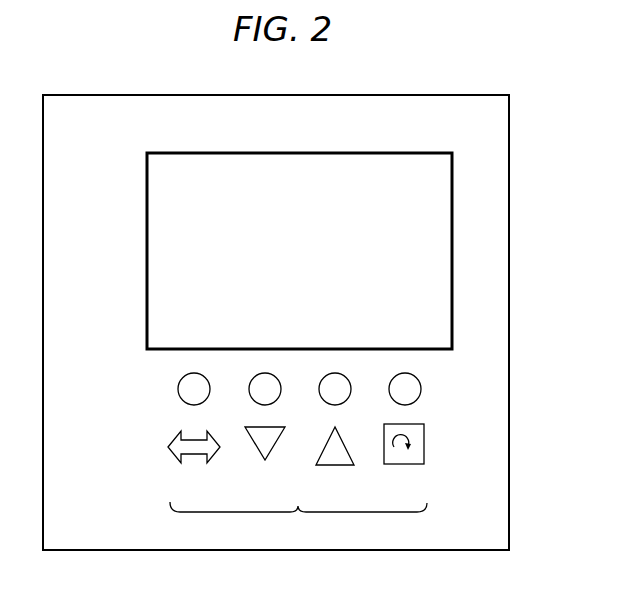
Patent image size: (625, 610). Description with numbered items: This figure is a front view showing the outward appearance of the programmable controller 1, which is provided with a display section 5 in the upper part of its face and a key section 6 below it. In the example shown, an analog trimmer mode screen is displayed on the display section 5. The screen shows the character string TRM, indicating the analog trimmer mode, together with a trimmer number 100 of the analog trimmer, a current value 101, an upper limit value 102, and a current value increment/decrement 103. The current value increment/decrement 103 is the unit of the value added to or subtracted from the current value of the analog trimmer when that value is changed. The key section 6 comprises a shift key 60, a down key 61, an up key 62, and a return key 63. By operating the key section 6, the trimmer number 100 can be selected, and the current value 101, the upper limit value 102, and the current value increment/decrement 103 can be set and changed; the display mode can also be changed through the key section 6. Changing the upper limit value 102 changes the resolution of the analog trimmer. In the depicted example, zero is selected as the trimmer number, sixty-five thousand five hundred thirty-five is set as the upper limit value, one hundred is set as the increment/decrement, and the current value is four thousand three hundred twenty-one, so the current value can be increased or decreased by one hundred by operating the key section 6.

The programmable controller 1 is at (64, 95).
The display section 5 is at (157, 153).
The key section 6 is at (298, 458).
The shift key 60 is at (193, 447).
The down key 61 is at (265, 462).
The up key 62 is at (335, 462).
The return key 63 is at (397, 464).
The trimmer number 100 is at (228, 168).
The current value 101 is at (268, 286).
The upper limit value 102 is at (450, 307).
The current value increment/decrement 103 is at (388, 194).